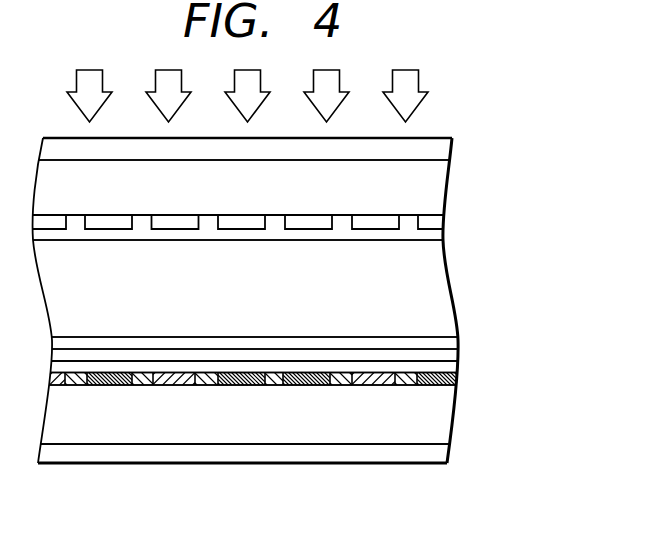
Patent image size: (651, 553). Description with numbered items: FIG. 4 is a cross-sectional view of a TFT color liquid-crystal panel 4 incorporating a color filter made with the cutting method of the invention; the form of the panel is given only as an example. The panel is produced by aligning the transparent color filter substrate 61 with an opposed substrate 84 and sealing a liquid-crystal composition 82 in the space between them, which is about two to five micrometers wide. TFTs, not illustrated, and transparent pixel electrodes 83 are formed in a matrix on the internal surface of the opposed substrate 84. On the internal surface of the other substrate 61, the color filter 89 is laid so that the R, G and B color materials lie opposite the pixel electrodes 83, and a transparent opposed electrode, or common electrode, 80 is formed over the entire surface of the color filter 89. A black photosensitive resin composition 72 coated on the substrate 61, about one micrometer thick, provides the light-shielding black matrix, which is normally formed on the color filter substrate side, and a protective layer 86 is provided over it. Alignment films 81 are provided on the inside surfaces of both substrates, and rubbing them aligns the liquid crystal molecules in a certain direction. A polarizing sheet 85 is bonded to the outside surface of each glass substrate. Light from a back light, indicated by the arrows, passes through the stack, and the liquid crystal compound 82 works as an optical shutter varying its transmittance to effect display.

The liquid crystal display panel 4 is at (112, 385).
The polarizing sheet 85 is at (435, 150).
The opposed substrate 84 is at (435, 187).
The transparent pixel electrodes 83 is at (435, 222).
The liquid-crystal composition 82 is at (435, 265).
The alignment films 81 is at (435, 235).
The opposed electrode 80 is at (460, 355).
The protective layer 86 is at (452, 367).
The black photosensitive resin composition 72 is at (458, 390).
The transparent substrate 61 is at (445, 417).
The color filter 89 is at (537, 358).